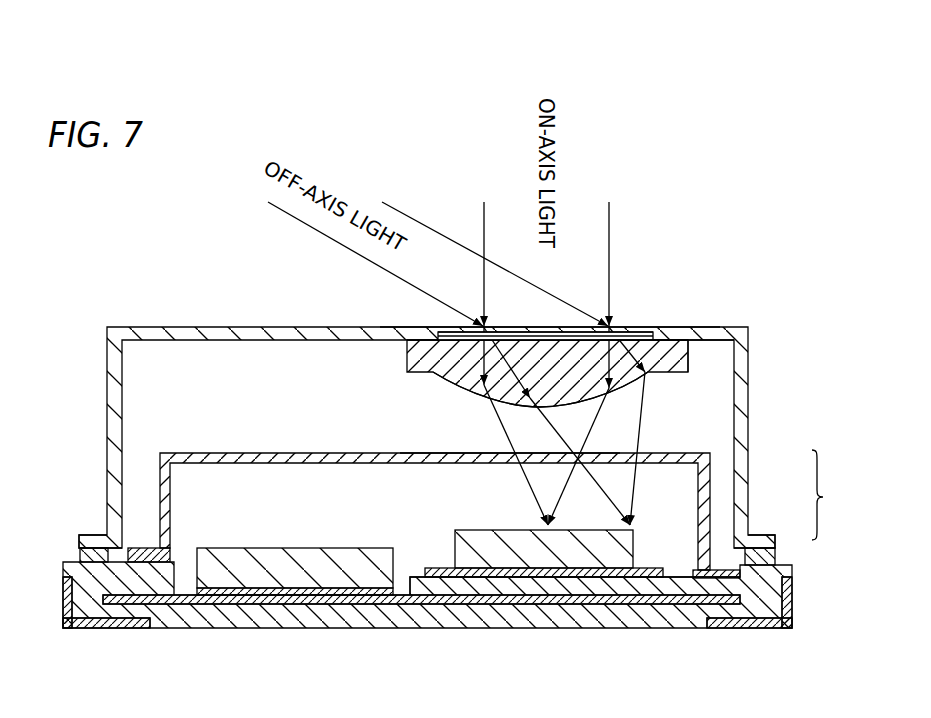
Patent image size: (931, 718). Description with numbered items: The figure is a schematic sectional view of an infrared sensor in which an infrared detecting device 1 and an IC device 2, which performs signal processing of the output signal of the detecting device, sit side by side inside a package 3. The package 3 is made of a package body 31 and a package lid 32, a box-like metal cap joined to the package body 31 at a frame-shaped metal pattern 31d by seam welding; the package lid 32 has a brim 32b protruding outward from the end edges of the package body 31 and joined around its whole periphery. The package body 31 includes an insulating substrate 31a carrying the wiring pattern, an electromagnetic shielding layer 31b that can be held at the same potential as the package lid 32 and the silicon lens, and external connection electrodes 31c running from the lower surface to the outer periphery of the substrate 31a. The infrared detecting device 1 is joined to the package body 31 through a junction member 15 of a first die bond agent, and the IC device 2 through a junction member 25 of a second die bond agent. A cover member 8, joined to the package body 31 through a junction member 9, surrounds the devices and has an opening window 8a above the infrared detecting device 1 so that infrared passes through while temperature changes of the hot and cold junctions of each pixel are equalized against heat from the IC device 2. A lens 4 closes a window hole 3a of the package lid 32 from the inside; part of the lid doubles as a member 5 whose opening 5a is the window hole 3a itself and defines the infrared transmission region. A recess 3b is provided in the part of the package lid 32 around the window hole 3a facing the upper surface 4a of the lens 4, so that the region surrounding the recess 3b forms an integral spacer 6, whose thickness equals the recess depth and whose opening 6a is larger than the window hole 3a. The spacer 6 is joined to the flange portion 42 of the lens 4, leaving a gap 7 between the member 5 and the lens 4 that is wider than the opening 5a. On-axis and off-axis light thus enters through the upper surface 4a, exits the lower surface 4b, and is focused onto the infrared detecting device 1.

The infrared detecting device 1 is at (612, 558).
The IC device 2 is at (282, 570).
The package 3 is at (826, 495).
The window hole 3a is at (580, 326).
The recess 3b is at (630, 339).
The lens 4 is at (662, 372).
The upper surface 4a is at (544, 340).
The lower surface 4b is at (476, 385).
The member 5 is at (638, 332).
The opening 5a is at (530, 332).
The spacer 6 is at (662, 335).
The opening 6a is at (637, 334).
The gap 7 is at (568, 339).
The cover member 8 is at (676, 453).
The opening window 8a is at (493, 453).
The junction member 9 is at (703, 580).
The junction member 15 is at (562, 573).
The junction member 25 is at (317, 593).
The package body 31 is at (765, 590).
The substrate 31a is at (547, 598).
The electromagnetic shielding layer 31b is at (547, 582).
The external connection electrodes 31c is at (103, 625).
The metal pattern 31d is at (90, 556).
The package lid 32 is at (741, 484).
The brim 32b is at (92, 540).
The flange portion 42 is at (688, 365).